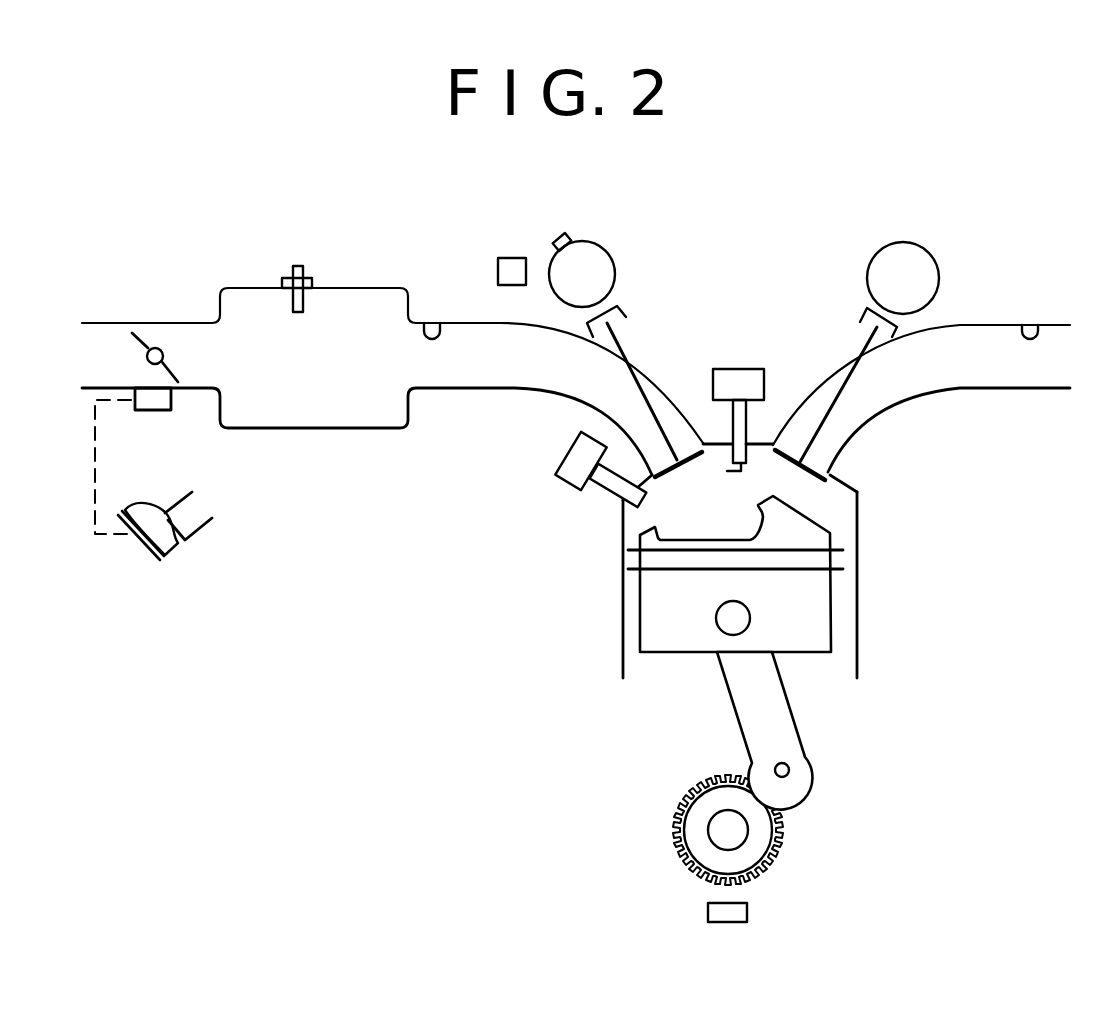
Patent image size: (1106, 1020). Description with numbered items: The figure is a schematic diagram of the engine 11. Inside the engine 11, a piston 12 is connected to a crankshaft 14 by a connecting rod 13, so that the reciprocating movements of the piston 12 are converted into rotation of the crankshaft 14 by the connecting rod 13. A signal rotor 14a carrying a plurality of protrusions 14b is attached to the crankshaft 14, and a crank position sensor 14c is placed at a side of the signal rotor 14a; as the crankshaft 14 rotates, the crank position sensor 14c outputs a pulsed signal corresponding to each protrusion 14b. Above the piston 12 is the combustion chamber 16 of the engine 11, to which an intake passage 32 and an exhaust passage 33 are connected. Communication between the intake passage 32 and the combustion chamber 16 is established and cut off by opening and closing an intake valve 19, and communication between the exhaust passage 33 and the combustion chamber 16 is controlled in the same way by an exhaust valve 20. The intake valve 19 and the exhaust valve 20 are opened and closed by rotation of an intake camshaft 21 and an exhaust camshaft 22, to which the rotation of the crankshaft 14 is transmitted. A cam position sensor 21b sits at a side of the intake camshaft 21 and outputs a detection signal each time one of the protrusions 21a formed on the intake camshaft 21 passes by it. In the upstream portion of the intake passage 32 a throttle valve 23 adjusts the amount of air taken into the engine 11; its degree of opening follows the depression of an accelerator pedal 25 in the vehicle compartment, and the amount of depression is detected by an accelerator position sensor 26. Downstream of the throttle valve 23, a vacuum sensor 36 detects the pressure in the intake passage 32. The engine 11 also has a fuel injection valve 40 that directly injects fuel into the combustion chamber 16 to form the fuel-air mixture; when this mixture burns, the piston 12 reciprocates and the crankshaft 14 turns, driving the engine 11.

The engine 11 is at (880, 565).
The piston 12 is at (810, 640).
The connecting rod 13 is at (795, 720).
The crankshaft 14 is at (735, 837).
The signal rotor 14a is at (705, 807).
The protrusions 14b is at (707, 884).
The crank position sensor 14c is at (747, 912).
The combustion chamber 16 is at (833, 508).
The intake valve 19 is at (617, 343).
The exhaust valve 20 is at (867, 340).
The intake camshaft 21 is at (615, 257).
The protrusions 21a is at (568, 238).
The cam position sensor 21b is at (509, 258).
The exhaust camshaft 22 is at (893, 248).
The throttle valve 23 is at (146, 328).
The accelerator pedal 25 is at (137, 508).
The accelerator position sensor 26 is at (172, 402).
The intake passage 32 is at (432, 323).
The exhaust passage 33 is at (1030, 325).
The vacuum sensor 36 is at (304, 270).
The fuel injection valve 40 is at (607, 492).